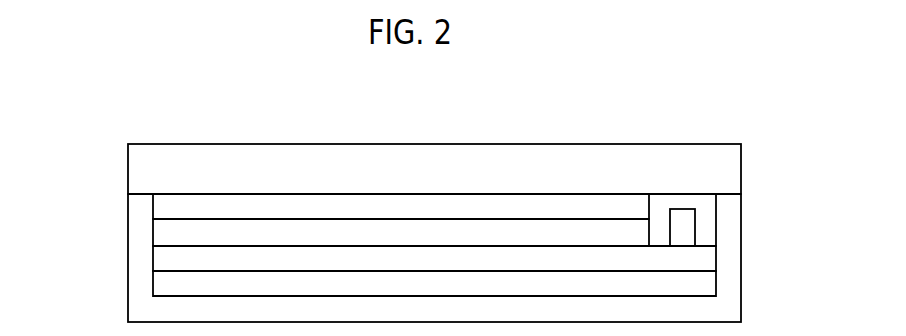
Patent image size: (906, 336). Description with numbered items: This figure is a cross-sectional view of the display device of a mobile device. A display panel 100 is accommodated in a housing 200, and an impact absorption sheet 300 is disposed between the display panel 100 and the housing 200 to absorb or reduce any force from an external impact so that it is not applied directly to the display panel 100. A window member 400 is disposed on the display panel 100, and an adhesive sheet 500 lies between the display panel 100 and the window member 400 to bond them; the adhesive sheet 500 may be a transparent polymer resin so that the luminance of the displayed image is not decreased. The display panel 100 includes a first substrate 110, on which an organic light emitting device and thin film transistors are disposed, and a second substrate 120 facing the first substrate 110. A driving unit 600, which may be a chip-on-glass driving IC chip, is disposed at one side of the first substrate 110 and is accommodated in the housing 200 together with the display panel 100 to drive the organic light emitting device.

The display panel 100 is at (374, 250).
The first substrate 110 is at (163, 257).
The second substrate 120 is at (163, 232).
The housing 200 is at (718, 306).
The impact absorption sheet 300 is at (702, 282).
The window member 400 is at (725, 165).
The adhesive sheet 500 is at (163, 209).
The driving unit 600 is at (686, 228).